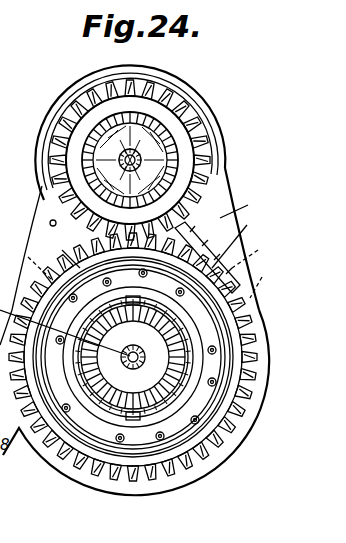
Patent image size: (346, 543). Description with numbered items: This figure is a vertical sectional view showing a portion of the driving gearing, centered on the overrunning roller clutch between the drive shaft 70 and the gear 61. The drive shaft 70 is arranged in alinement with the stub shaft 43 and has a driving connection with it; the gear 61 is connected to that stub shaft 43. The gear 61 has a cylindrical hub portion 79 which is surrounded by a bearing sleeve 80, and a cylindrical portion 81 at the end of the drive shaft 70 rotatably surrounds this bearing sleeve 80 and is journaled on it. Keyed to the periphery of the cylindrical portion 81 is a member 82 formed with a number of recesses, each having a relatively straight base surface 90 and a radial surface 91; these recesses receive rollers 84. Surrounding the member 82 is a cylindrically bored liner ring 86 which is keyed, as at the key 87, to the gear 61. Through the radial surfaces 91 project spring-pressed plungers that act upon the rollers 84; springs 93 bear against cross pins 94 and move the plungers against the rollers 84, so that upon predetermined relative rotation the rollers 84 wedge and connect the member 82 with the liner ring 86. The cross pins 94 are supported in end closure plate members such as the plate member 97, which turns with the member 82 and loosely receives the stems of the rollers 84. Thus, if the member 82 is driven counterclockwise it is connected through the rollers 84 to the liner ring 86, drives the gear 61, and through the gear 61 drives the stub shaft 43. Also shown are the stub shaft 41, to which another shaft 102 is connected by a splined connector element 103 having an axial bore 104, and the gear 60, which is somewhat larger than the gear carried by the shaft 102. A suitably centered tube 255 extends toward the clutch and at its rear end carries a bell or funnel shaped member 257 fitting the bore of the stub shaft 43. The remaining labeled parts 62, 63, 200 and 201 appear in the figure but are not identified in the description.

The stub shaft 41 is at (87, 167).
The gear 60 is at (193, 113).
The gear 61 is at (180, 455).
The gear 62 is at (162, 90).
The plate 63 is at (103, 390).
The drive shaft 70 is at (188, 278).
The cylindrical hub portion 79 is at (215, 405).
The bearing sleeve 80 is at (205, 368).
The cylindrical portion 81 is at (108, 360).
The member 82 is at (195, 335).
The rollers 84 is at (142, 270).
The liner ring 86 is at (112, 420).
The key 87 is at (114, 508).
The base surfaces 90 is at (146, 440).
The radial surfaces 91 is at (254, 253).
The springs 93 is at (55, 430).
The cross pins 94 is at (95, 492).
The plate member 97 is at (239, 241).
The shaft 102 is at (110, 142).
The splined connector element 103 is at (197, 137).
The axial bore 104 is at (182, 152).
The pivot 200 is at (50, 223).
The casing 201 is at (139, 256).
The tube 255 is at (215, 385).
The bell or funnel shaped member 257 is at (170, 483).
The stub shaft 43 is at (197, 428).